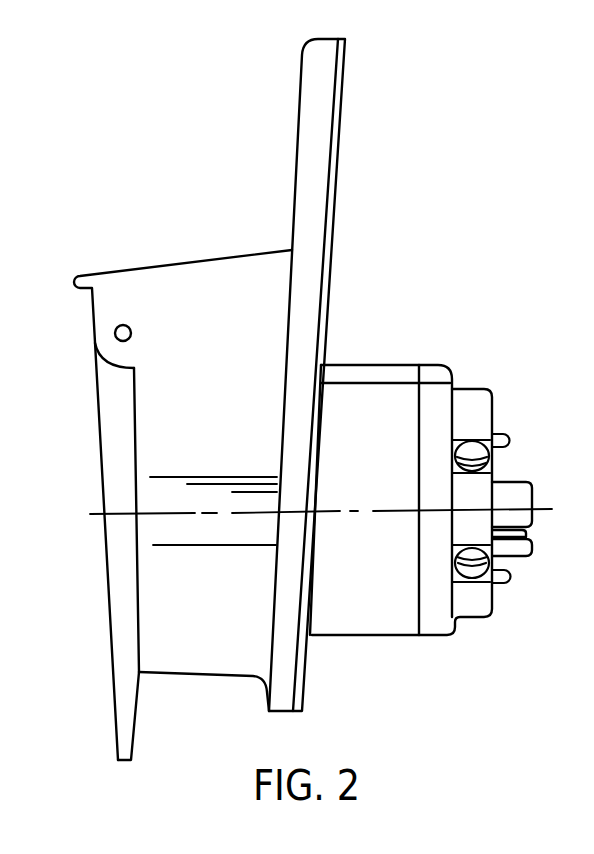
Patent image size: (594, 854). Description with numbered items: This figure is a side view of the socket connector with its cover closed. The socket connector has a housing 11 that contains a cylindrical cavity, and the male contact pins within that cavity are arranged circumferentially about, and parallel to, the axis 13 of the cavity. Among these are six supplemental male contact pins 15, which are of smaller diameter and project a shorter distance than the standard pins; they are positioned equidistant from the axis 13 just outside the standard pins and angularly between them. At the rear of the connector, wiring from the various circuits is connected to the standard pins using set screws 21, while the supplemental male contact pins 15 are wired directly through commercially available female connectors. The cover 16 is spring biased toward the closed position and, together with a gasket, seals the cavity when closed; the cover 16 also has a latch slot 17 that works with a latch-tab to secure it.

The housing 11 is at (197, 677).
The axis 13 is at (403, 508).
The supplemental male contact pins 15 is at (503, 437).
The cover 16 is at (108, 617).
The latch slot 17 is at (114, 705).
The set screws 21 is at (493, 470).